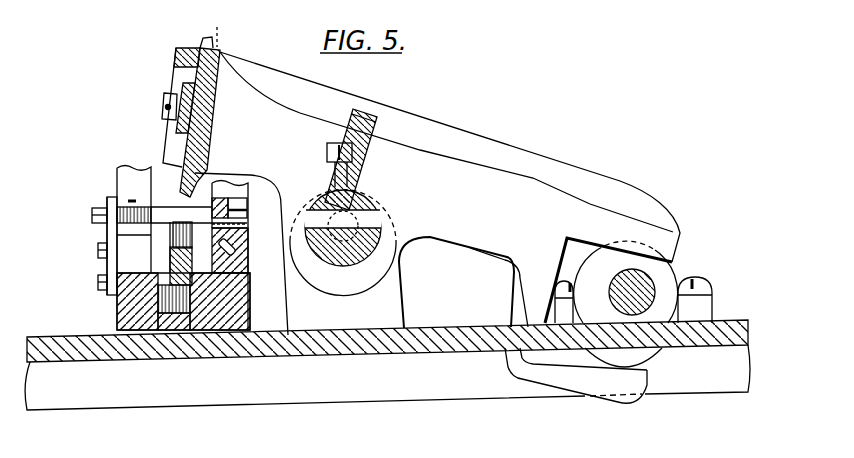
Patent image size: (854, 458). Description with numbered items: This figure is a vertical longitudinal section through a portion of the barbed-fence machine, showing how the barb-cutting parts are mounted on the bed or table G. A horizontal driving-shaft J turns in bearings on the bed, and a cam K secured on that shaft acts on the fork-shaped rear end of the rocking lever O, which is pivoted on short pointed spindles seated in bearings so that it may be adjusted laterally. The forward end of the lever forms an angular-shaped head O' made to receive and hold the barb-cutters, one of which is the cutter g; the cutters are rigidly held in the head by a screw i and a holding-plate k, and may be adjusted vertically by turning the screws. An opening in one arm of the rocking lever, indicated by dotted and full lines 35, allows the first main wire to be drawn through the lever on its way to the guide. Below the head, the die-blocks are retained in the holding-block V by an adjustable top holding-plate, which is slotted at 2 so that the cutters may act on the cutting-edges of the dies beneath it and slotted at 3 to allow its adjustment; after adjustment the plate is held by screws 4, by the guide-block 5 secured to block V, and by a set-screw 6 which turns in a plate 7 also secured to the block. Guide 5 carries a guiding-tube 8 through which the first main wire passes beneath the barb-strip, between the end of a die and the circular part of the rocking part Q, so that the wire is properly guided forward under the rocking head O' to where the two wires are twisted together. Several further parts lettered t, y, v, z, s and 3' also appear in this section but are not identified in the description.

The rocking lever O is at (437, 193).
The angular-shaped head of rocking lever O' is at (196, 102).
The bed or table G is at (387, 365).
The holding-block V is at (250, 292).
The cam K is at (667, 370).
The horizontal driving-shaft J is at (655, 280).
The slot 2 is at (178, 208).
The slots 3 is at (181, 267).
The nut of bolt 3' is at (172, 264).
The screws 4 is at (238, 195).
The guide-block 5 is at (223, 190).
The set-screw 6 is at (92, 242).
The plate 7 is at (107, 233).
The guiding-tube 8 is at (247, 222).
The screw i is at (163, 104).
The holding-plate k is at (177, 134).
The tip t is at (180, 178).
The cutter g is at (190, 188).
The wedge y is at (190, 195).
The slot v is at (178, 243).
The rocking part Q is at (200, 260).
The opening in arm of rocking lever 35 is at (381, 204).
The pin band z is at (385, 233).
The set screw s is at (351, 159).